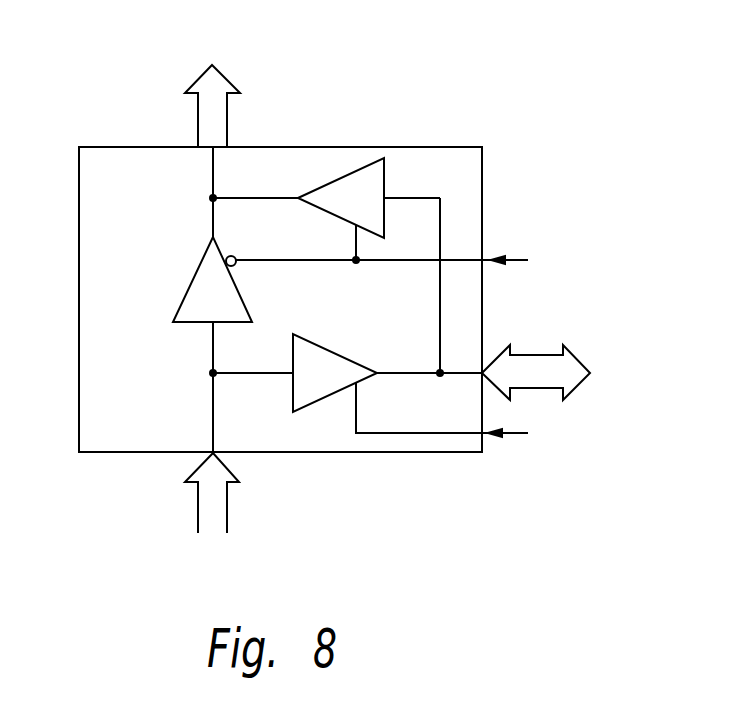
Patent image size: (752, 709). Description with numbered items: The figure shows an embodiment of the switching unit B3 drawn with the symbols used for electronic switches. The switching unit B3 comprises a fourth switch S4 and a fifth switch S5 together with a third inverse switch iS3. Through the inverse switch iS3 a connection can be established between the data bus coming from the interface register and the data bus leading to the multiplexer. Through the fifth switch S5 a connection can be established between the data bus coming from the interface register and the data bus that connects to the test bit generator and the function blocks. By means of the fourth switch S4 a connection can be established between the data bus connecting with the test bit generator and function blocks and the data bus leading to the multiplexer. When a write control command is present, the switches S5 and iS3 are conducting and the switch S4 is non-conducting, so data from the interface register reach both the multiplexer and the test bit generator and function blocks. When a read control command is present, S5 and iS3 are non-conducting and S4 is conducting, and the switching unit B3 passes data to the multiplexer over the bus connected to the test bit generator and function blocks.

The switching unit B3 is at (380, 110).
The fourth switch S4 is at (338, 197).
The third inverse switch iS3 is at (195, 279).
The fifth switch S5 is at (335, 387).